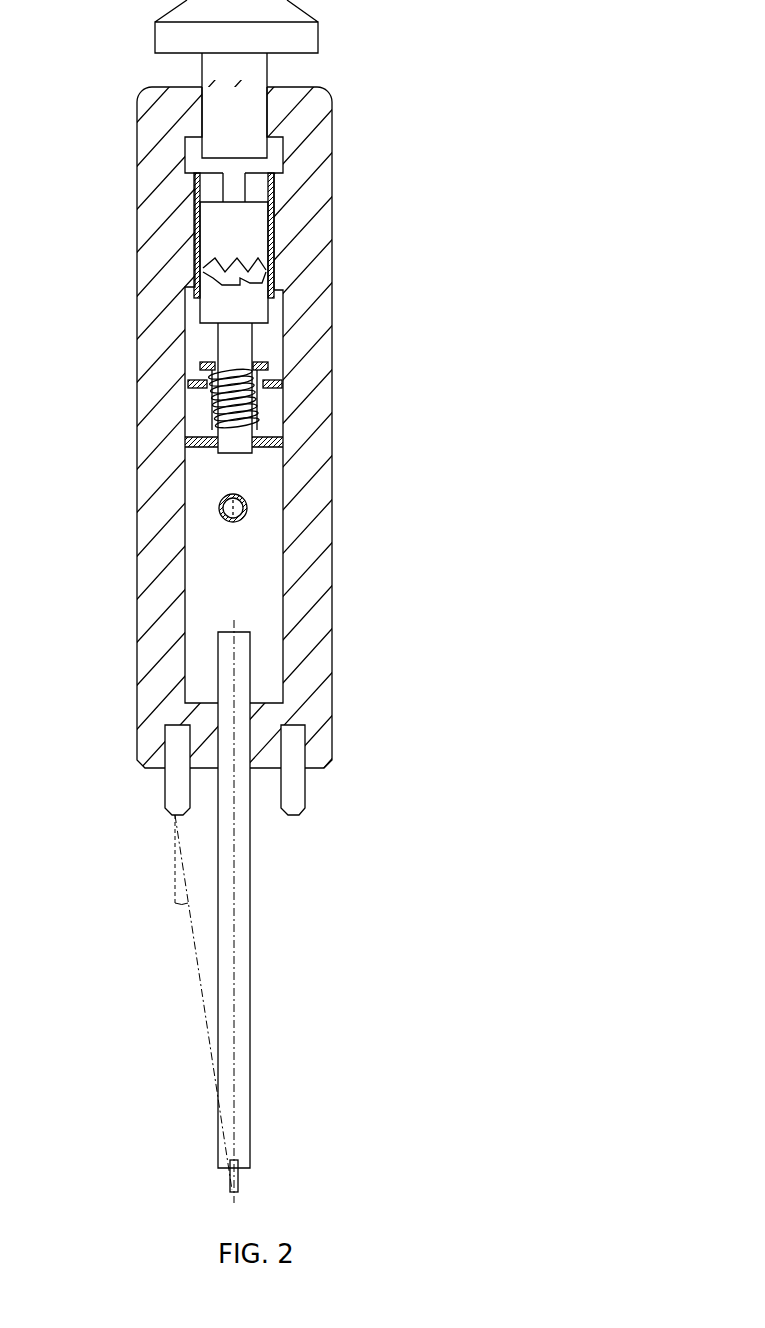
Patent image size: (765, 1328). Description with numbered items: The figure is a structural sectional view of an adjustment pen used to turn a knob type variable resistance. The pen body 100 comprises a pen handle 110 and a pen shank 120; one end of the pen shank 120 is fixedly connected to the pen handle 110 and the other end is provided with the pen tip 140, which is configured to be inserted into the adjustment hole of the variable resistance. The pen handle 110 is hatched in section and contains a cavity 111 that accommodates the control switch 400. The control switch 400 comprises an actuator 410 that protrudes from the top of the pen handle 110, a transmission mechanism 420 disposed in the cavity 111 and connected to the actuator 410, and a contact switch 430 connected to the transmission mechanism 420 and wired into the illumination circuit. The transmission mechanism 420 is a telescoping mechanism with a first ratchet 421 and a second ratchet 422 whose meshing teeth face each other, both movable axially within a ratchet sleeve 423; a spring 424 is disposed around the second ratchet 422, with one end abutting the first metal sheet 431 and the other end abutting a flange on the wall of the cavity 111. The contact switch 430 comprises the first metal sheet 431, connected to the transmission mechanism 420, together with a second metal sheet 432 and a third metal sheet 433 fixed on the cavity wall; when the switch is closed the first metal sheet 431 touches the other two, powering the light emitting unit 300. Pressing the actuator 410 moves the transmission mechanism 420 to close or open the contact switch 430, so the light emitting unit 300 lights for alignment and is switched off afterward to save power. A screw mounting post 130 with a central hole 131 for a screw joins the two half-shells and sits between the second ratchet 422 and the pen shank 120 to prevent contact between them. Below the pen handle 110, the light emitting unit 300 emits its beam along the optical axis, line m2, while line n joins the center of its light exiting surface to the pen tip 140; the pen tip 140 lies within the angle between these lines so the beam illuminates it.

The pen body 100 is at (337, 511).
The pen handle 110 is at (308, 694).
The cavity 111 is at (260, 588).
The pen shank 120 is at (237, 1025).
The screw mounting post 130 is at (219, 515).
The central hole 131 is at (233, 508).
The pen tip 140 is at (239, 1181).
The light emitting unit 300 is at (293, 790).
The control switch 400 is at (304, 70).
The actuator 410 is at (318, 40).
The transmission mechanism 420 is at (204, 192).
The first ratchet 421 is at (250, 240).
The second ratchet 422 is at (250, 305).
The ratchet sleeve 423 is at (250, 203).
The spring 424 is at (253, 376).
The contact switch 430 is at (195, 343).
The first metal sheet 431 is at (205, 369).
The second metal sheet 432 is at (187, 386).
The third metal sheet 433 is at (272, 392).
The line m2 is at (172, 882).
The line n is at (198, 996).